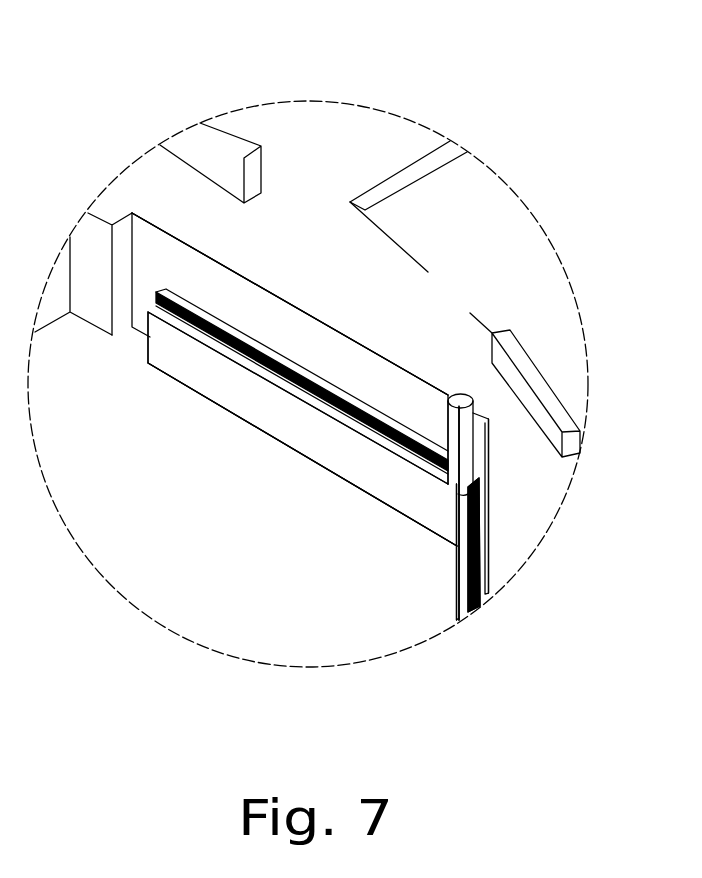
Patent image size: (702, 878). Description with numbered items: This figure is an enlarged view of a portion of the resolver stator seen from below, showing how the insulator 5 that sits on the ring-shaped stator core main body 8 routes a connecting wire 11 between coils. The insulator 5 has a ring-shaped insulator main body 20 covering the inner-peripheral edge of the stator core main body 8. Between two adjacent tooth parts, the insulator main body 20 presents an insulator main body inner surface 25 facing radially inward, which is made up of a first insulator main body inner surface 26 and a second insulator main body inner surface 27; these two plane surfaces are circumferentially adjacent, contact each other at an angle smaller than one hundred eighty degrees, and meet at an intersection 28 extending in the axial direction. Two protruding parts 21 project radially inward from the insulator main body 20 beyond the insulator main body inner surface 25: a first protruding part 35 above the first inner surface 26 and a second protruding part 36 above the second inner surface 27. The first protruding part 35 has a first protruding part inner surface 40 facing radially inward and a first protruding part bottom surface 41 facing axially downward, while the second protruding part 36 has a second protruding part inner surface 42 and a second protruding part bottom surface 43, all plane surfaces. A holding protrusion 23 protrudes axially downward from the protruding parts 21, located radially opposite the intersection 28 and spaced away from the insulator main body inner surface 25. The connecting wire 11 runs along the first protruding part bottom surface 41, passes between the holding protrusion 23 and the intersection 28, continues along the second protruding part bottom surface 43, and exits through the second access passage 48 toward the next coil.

The insulator 5 is at (377, 250).
The stator core main body 8 is at (490, 230).
The connecting wire 11 is at (345, 418).
The insulator main body 20 is at (282, 242).
The protruding part 21 is at (303, 491).
The holding protrusion 23 is at (461, 394).
The insulator main body inner surface 25 is at (310, 403).
The first insulator main body inner surface 26 is at (480, 600).
The second insulator main body inner surface 27 is at (353, 365).
The intersection 28 is at (489, 416).
The first protruding part 35 is at (459, 604).
The second protruding part 36 is at (222, 375).
The first protruding part inner surface 40 is at (457, 565).
The first protruding part bottom surface 41 is at (480, 555).
The second protruding part inner surface 42 is at (253, 408).
The second protruding part bottom surface 43 is at (305, 370).
The second access passage 48 is at (139, 329).